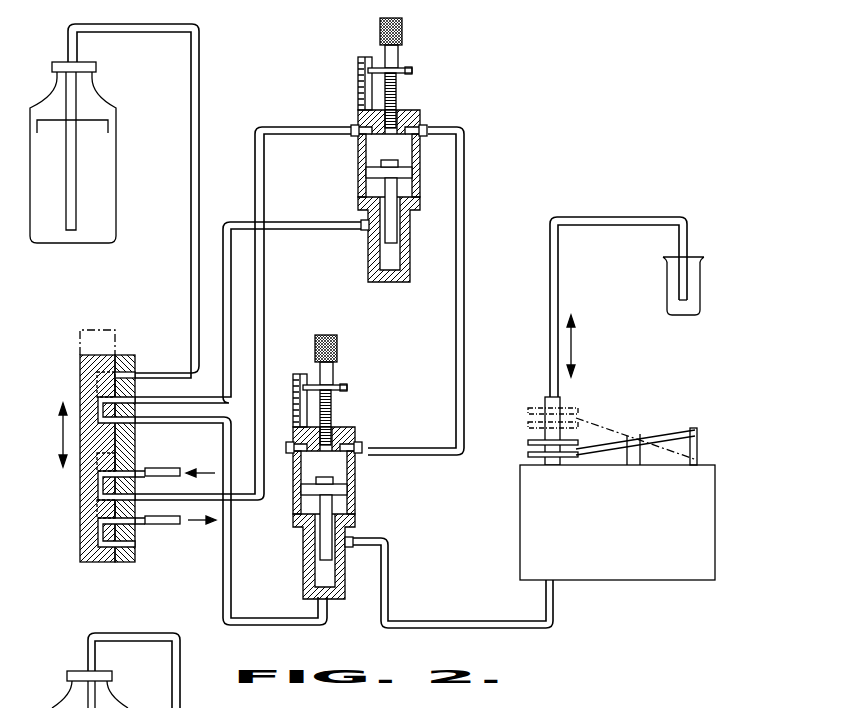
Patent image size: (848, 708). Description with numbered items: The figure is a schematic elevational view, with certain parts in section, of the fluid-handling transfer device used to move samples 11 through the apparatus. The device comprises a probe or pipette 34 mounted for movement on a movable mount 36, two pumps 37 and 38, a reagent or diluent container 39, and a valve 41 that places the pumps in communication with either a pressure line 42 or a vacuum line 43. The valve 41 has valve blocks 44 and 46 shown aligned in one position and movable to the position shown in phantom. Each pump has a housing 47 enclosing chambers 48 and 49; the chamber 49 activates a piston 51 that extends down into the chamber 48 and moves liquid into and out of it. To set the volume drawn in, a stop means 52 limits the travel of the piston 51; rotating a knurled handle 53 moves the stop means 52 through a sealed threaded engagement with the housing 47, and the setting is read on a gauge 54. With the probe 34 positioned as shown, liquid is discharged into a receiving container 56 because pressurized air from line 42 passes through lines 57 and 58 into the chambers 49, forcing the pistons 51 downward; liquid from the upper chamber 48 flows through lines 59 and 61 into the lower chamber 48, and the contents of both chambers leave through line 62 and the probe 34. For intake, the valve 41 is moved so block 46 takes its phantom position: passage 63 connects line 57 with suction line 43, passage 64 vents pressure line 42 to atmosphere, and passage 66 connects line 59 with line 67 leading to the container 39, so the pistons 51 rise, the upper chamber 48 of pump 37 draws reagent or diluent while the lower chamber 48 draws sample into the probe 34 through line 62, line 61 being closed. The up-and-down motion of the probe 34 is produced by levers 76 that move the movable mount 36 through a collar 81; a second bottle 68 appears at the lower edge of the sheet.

The sample 11 is at (695, 290).
The probe 34 is at (687, 245).
The movable mount 36 is at (560, 403).
The pump 37 is at (396, 291).
The pump 38 is at (365, 496).
The reagent or diluent container 39 is at (115, 166).
The valve 41 is at (72, 496).
The pressure line 42 is at (162, 468).
The vacuum line 43 is at (165, 525).
The valve block 44 is at (125, 565).
The valve block 46 is at (100, 565).
The housing 47 is at (362, 180).
The chamber 48 is at (380, 267).
The chamber 49 is at (386, 144).
The piston 51 is at (393, 226).
The stop means 52 is at (399, 92).
The knurled handle 53 is at (403, 30).
The gauge 54 is at (358, 66).
The receiving container 56 is at (667, 284).
The line 57 is at (276, 127).
The line 58 is at (466, 295).
The line 59 is at (292, 228).
The line 61 is at (232, 554).
The line 62 is at (428, 627).
The passage 63 is at (90, 540).
The passage 64 is at (98, 478).
The passage 66 is at (99, 410).
The line 67 is at (191, 265).
The second bottle 68 is at (187, 670).
The lever 76 is at (656, 434).
The collar 81 is at (529, 440).